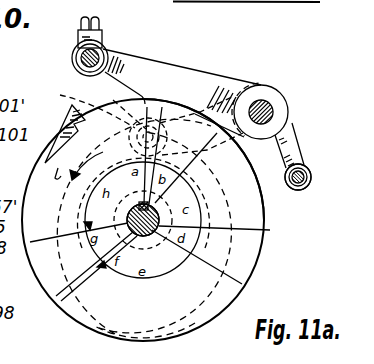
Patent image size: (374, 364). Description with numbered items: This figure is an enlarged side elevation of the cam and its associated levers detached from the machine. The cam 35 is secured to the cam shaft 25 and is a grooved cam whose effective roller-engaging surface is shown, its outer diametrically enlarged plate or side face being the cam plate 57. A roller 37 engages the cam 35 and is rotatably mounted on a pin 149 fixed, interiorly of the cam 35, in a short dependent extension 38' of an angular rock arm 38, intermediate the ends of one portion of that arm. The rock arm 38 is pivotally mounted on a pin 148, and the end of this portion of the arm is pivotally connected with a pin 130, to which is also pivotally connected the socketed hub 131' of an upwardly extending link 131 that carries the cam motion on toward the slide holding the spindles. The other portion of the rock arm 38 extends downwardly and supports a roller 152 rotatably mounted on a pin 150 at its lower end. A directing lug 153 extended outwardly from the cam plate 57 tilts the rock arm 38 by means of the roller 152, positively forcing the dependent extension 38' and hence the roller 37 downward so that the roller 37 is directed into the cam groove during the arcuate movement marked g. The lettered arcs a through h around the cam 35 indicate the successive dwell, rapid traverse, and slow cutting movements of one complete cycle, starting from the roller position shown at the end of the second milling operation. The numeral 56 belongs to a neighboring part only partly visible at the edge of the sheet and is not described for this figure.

The angular rock arm 38 is at (182, 90).
The short dependent extension 38' is at (166, 119).
The roller 37 is at (90, 106).
The pin 130 is at (73, 58).
The upwardly extending link 131 is at (113, 17).
The socketed hub 131' is at (120, 37).
The pin 148 is at (270, 104).
The pin 149 is at (160, 132).
The pin 150 is at (302, 188).
The roller 152 is at (303, 166).
The directing lug 153 is at (72, 128).
The cam plate 57 is at (262, 260).
The cam 35 is at (173, 328).
The cam shaft 25 is at (148, 236).
The hook 56 is at (85, 187).